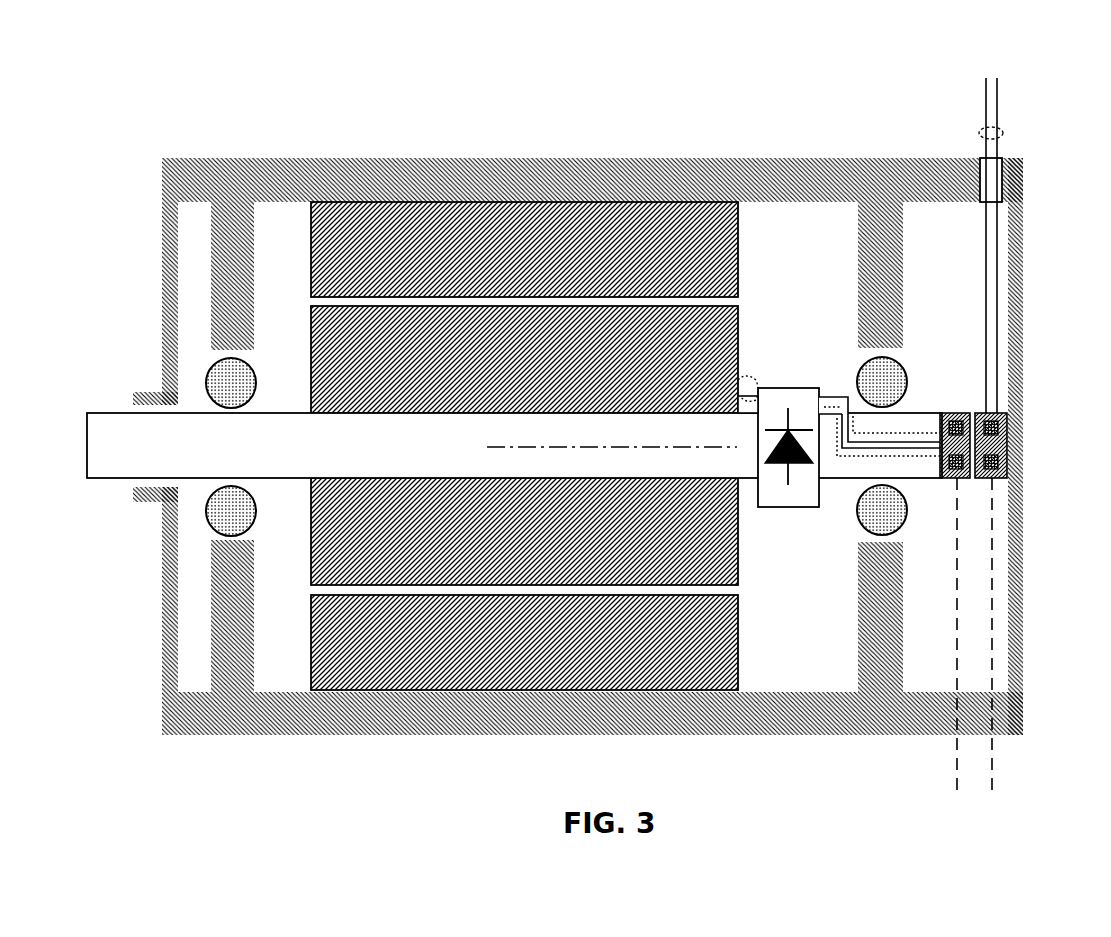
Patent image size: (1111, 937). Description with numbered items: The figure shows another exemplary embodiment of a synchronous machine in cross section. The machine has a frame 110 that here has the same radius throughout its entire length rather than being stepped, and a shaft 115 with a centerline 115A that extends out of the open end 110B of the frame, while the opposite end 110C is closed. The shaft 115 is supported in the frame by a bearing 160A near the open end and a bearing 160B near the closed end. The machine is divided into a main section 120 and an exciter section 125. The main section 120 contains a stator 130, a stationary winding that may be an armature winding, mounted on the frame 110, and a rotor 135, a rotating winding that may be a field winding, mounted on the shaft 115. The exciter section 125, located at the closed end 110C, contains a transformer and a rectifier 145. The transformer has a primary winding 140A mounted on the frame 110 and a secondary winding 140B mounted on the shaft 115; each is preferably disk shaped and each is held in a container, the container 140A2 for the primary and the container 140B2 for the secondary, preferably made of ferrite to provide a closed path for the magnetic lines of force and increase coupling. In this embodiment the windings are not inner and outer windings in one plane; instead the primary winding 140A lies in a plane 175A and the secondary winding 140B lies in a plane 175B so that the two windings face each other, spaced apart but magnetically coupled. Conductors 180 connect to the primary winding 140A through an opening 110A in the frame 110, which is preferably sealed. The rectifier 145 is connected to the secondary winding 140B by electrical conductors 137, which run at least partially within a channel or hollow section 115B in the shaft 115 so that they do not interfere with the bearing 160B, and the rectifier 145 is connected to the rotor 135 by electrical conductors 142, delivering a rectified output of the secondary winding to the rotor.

The frame 110 is at (465, 190).
The opening 110A is at (1006, 158).
The open end 110B is at (128, 487).
The closed end 110C is at (1040, 427).
The shaft 115 is at (369, 458).
The centerline 115A is at (612, 435).
The channel or hollow section 115B is at (856, 460).
The main section 120 is at (725, 750).
The exciter section 125 is at (1013, 755).
The stator 130 is at (465, 256).
The rotor 135 is at (463, 383).
The electrical conductors 137 is at (831, 382).
The primary winding 140A is at (1030, 411).
The container 140A2 is at (1006, 480).
The secondary winding 140B is at (941, 449).
The container 140B2 is at (961, 411).
The electrical conductors 142 is at (750, 372).
The rectifier 145 is at (786, 510).
The bearing 160A is at (210, 365).
The bearing 160B is at (860, 527).
The plane 175A is at (1002, 648).
The plane 175B is at (945, 648).
The conductors 180 is at (1006, 127).